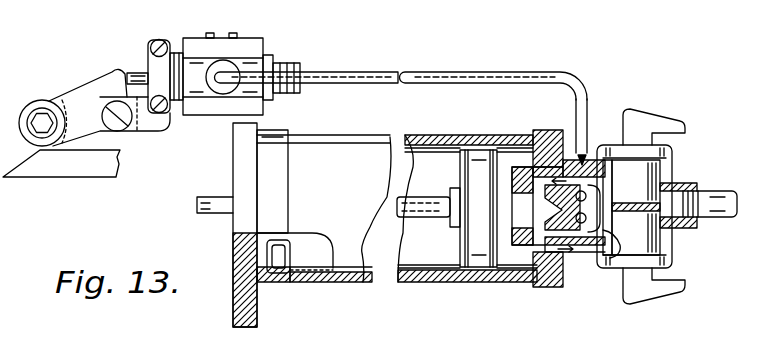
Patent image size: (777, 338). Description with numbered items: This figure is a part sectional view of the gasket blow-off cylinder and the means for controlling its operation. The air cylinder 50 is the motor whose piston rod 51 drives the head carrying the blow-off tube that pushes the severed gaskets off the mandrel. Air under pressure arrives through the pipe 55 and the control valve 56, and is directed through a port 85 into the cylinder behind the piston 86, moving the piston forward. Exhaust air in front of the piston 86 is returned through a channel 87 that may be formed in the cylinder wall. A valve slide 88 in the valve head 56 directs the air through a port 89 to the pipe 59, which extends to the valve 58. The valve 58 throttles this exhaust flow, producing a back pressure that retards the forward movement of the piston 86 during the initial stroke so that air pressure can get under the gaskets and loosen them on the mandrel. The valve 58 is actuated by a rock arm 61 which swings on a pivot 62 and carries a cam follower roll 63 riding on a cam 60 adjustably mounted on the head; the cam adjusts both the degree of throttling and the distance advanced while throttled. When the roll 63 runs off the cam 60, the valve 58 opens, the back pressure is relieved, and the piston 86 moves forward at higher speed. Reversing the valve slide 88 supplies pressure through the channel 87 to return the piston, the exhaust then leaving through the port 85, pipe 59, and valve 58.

The air cylinder 50 is at (355, 148).
The piston rod 51 is at (403, 192).
The pipe 55 is at (723, 194).
The control valve 56 is at (672, 249).
The valve 58 is at (254, 48).
The pipe 59 is at (365, 82).
The cam 60 is at (48, 160).
The rock arm 61 is at (74, 100).
The pivot 62 is at (126, 124).
The cam follower roll 63 is at (54, 100).
The port 85 is at (591, 160).
The piston 86 is at (478, 153).
The channel 87 is at (322, 283).
The valve slide 88 is at (620, 248).
The port 89 is at (553, 212).